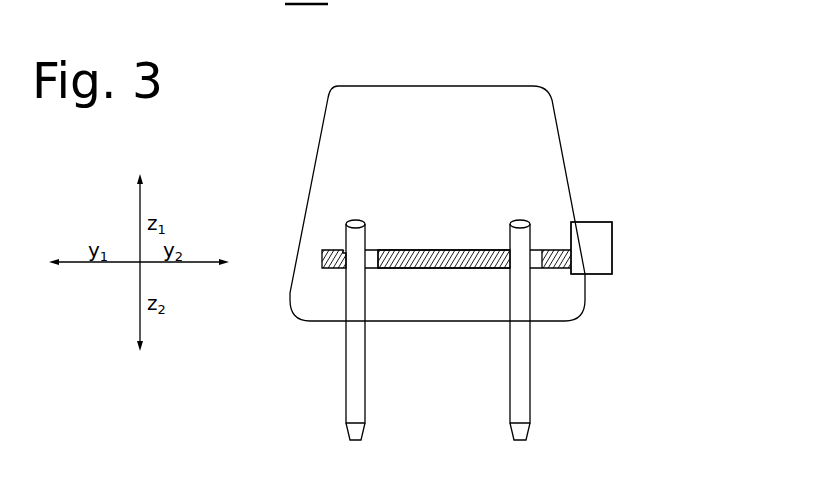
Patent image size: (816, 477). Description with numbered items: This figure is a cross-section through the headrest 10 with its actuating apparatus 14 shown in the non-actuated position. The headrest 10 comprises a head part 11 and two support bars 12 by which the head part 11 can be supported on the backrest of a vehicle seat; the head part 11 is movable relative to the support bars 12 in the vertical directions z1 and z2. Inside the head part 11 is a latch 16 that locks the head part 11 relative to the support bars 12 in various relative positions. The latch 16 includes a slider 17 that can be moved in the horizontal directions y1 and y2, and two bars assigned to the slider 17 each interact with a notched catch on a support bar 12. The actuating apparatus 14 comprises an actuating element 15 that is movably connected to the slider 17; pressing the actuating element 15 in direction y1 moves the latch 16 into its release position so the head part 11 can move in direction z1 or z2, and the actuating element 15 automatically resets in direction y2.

The headrest 10 is at (476, 233).
The head part 11 is at (520, 108).
The support bars 12 is at (355, 393).
The actuating apparatus 14 is at (618, 227).
The actuating element 15 is at (598, 249).
The latch 16 is at (396, 208).
The slider 17 is at (423, 250).